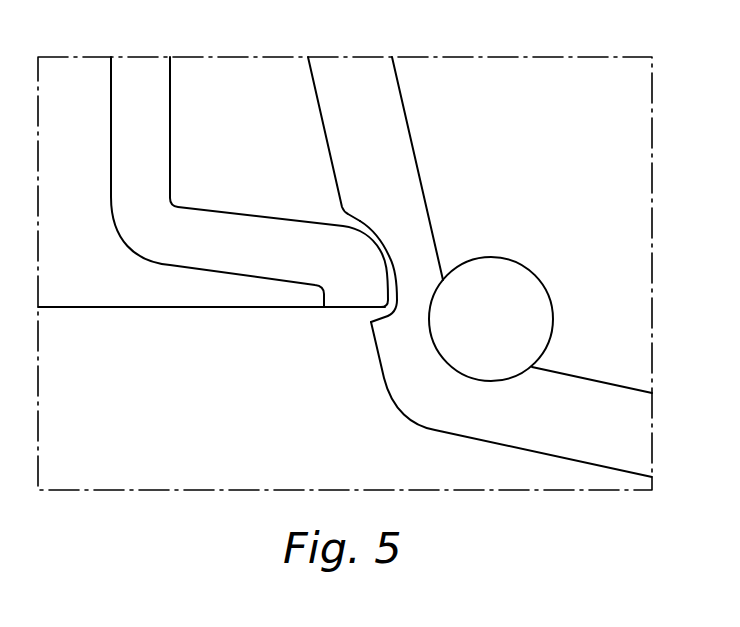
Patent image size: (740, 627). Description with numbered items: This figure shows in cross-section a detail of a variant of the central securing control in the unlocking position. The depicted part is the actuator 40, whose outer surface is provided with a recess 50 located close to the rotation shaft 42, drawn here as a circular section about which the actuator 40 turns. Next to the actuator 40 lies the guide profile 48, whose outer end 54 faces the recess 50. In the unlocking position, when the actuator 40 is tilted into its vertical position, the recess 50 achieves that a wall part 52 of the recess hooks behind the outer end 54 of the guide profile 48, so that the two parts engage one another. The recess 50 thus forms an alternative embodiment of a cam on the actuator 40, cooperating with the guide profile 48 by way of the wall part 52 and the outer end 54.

The actuator 40 is at (582, 208).
The rotation shaft 42 is at (506, 330).
The guide profile 48 is at (247, 230).
The recess 50 is at (390, 250).
The wall part 52 is at (387, 320).
The outer end 54 is at (352, 310).